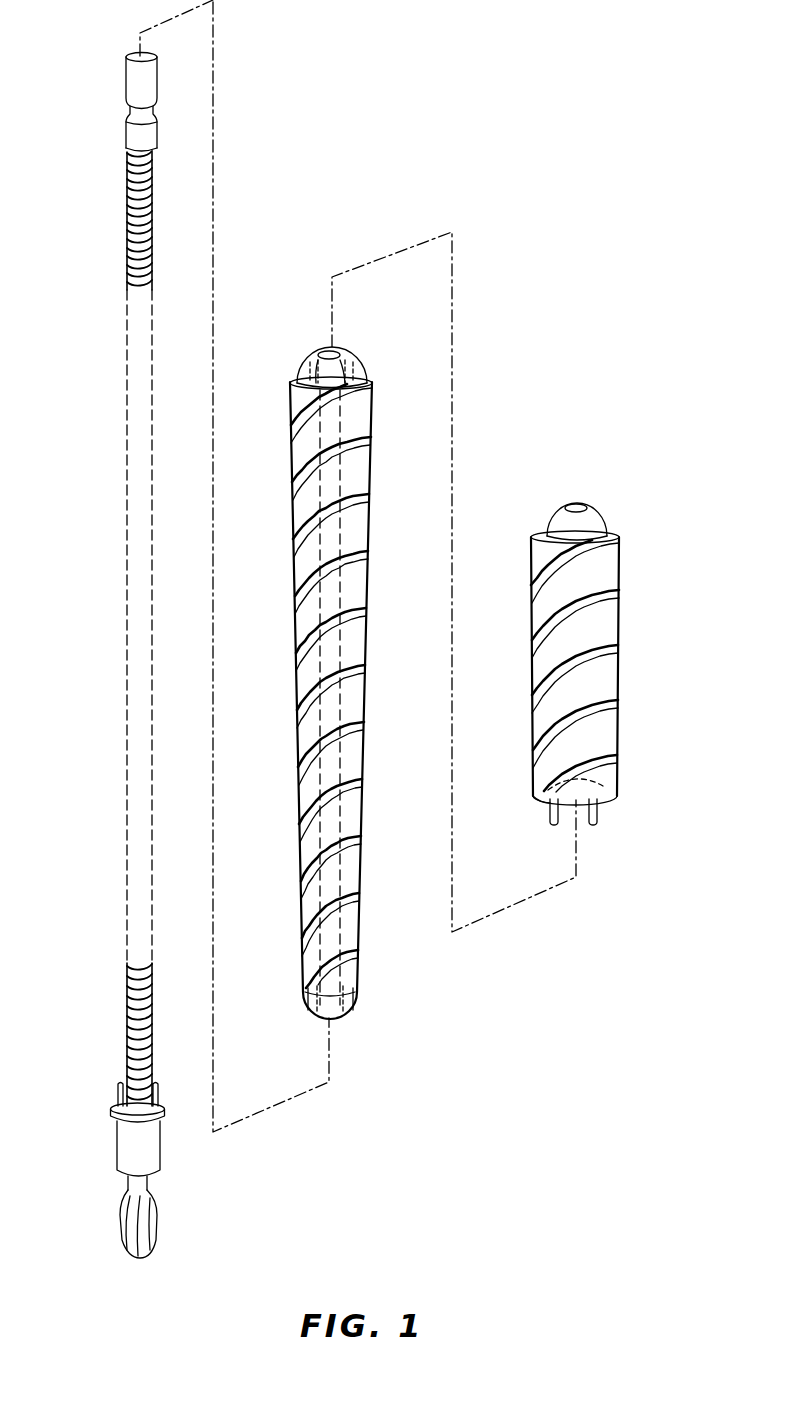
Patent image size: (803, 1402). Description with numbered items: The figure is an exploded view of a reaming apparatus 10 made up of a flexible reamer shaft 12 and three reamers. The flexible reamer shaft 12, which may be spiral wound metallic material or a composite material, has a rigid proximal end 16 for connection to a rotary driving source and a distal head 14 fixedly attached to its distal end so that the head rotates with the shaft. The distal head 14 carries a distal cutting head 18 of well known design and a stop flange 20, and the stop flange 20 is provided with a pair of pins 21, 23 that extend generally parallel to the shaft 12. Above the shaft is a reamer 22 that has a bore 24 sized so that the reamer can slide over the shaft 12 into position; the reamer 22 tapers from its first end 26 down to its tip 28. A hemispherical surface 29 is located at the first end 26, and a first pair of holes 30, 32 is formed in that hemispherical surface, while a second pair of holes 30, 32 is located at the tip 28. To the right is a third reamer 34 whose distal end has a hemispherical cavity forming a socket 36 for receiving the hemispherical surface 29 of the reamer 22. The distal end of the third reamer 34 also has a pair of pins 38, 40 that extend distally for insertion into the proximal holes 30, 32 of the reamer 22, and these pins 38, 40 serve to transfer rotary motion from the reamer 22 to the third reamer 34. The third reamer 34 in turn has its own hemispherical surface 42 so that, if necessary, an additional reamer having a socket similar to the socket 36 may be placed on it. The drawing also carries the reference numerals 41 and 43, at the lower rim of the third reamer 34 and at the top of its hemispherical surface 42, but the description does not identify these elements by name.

The reaming apparatus 10 is at (616, 333).
The flexible reamer shaft 12 is at (136, 194).
The distal head 14 is at (128, 1150).
The rigid proximal end 16 is at (134, 91).
The distal cutting head 18 is at (122, 1222).
The stop flange 20 is at (112, 1113).
The pin 21 is at (118, 1088).
The reamer 22 is at (353, 534).
The pin 23 is at (160, 1089).
The bore 24 is at (338, 474).
The first end 26 is at (371, 380).
The tip 28 is at (346, 1008).
The hemispherical surface 29 is at (335, 349).
The hole 30 is at (303, 365).
The hole 32 is at (356, 369).
The third reamer 34 is at (610, 600).
The socket 36 is at (590, 777).
The pin 38 is at (550, 818).
The pin 40 is at (594, 827).
The lower rim 41 is at (534, 801).
The hemispherical surface 42 is at (608, 520).
The cap opening 43 is at (578, 510).